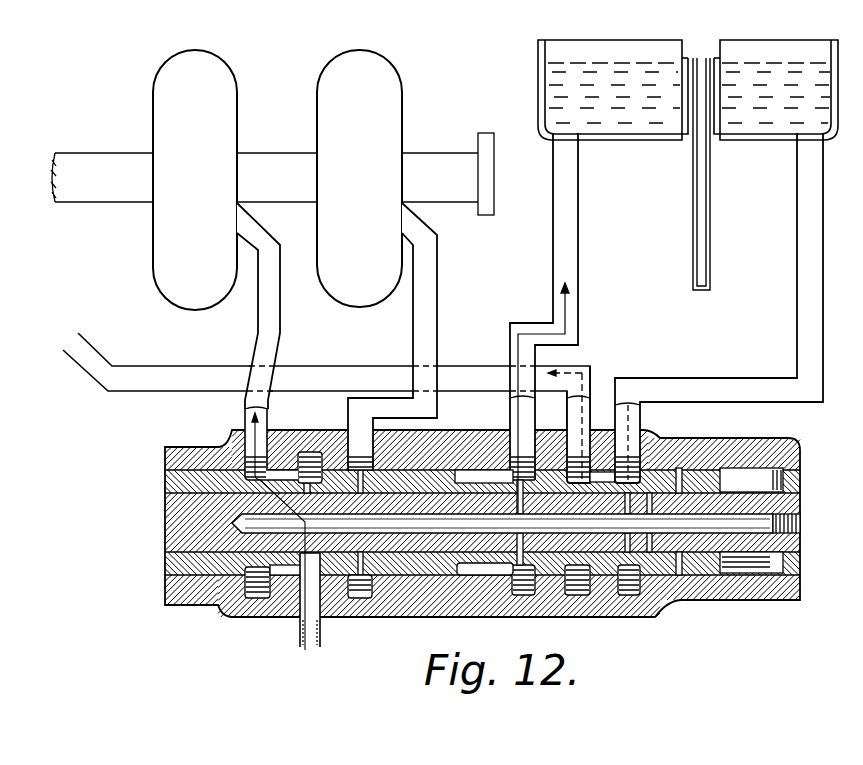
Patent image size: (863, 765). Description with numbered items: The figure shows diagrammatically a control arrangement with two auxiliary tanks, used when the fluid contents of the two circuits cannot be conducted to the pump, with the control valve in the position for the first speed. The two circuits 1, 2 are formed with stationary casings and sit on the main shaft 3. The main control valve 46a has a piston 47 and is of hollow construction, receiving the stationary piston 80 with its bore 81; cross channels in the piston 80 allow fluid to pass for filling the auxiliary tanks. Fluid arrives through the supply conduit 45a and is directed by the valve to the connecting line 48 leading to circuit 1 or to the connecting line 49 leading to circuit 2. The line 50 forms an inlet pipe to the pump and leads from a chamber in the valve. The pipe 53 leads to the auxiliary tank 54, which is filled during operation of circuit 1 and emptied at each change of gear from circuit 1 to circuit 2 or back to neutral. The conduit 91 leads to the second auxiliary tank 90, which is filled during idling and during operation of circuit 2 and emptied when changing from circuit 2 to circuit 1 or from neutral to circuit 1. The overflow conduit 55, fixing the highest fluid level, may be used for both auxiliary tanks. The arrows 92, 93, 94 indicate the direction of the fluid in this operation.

The circuit 1 is at (195, 180).
The circuit 2 is at (359, 178).
The main shaft 3 is at (103, 160).
The supply conduit 45a is at (304, 648).
The main control valve 46a is at (466, 438).
The piston of the main control valve 47 is at (726, 477).
The connecting line to circuit 1 48 is at (258, 327).
The connecting line to circuit 2 49 is at (413, 332).
The inlet pipe to the pump 50 is at (80, 337).
The pipe to auxiliary tank 53 is at (510, 342).
The auxiliary tank 54 is at (613, 142).
The overflow pipe 55 is at (711, 238).
The stationary piston 80 is at (165, 512).
The bore 81 is at (516, 523).
The auxiliary tank 90 is at (785, 142).
The conduit to auxiliary tank 90 91 is at (738, 378).
The arrow 92 is at (247, 422).
The arrow 93 is at (567, 307).
The arrow 94 is at (574, 378).